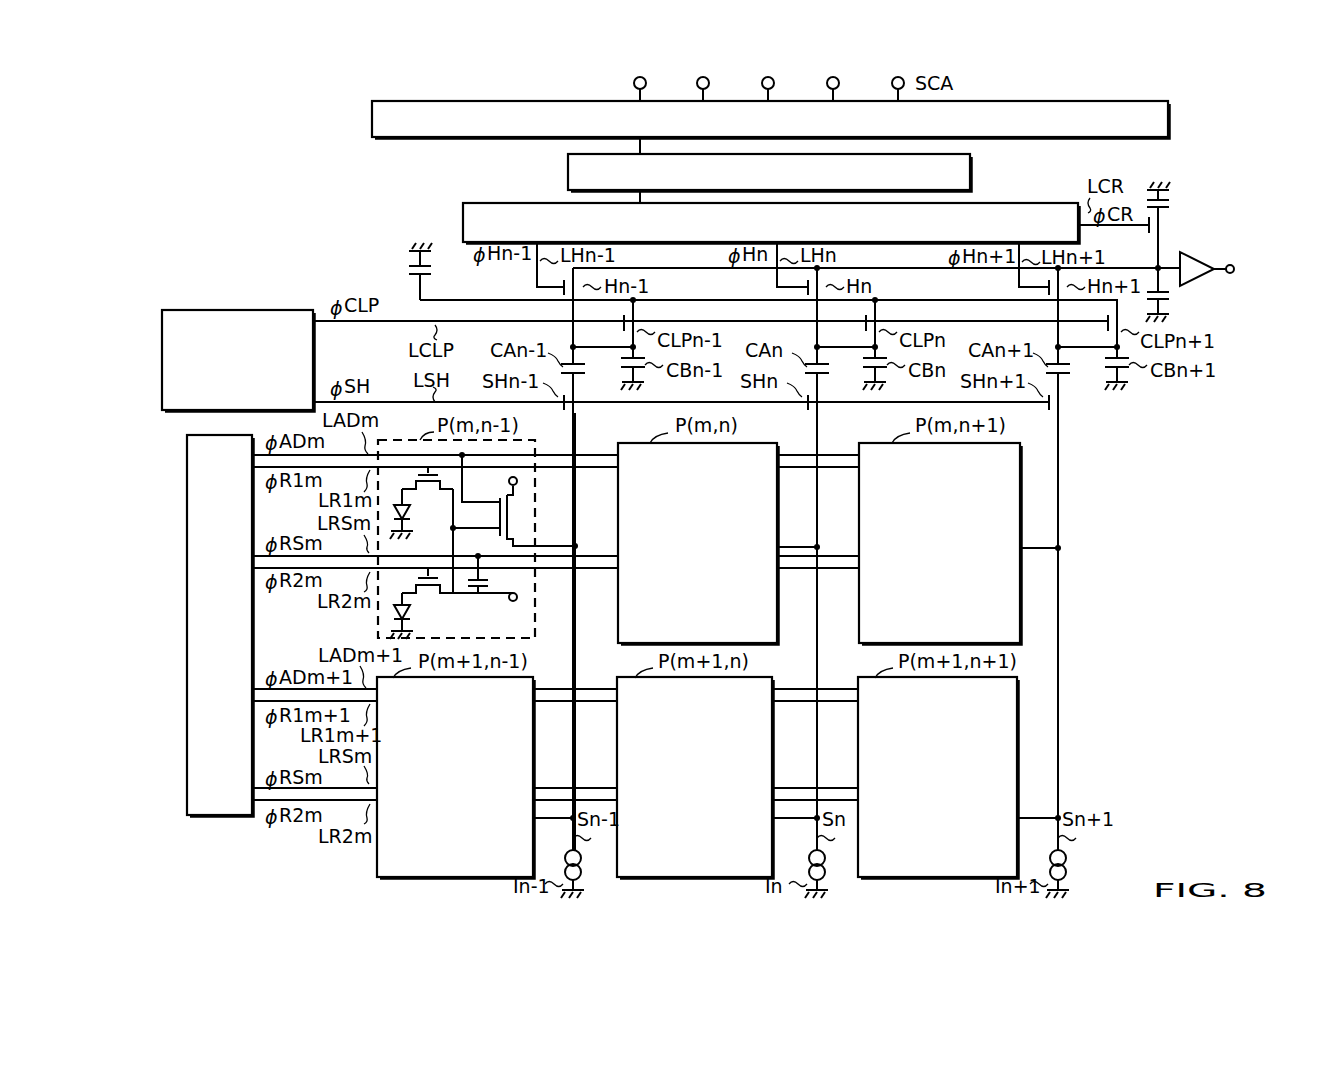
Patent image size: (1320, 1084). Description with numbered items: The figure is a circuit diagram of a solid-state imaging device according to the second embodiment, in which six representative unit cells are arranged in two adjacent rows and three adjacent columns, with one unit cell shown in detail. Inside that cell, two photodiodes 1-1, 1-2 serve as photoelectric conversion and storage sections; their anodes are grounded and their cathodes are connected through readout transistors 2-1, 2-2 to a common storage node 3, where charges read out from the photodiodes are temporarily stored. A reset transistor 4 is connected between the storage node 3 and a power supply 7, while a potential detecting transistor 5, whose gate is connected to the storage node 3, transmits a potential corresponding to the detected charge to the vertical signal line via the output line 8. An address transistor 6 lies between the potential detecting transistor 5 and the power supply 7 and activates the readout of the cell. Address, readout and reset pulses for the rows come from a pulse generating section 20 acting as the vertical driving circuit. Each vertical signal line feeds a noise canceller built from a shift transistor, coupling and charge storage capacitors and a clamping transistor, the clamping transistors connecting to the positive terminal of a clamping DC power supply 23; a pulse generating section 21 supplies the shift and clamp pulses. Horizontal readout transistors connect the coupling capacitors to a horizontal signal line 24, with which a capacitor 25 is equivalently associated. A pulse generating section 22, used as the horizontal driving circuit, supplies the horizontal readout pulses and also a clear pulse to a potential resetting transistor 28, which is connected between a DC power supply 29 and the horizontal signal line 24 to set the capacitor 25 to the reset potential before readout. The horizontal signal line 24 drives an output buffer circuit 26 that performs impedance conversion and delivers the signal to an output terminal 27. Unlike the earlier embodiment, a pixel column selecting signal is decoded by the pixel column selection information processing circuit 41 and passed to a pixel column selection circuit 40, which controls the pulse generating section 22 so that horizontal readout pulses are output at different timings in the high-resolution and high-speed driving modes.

The pixel column selection information processing circuit (decoder) 41 is at (370, 121).
The pixel column selection circuit 40 is at (563, 174).
The pulse generating section 22 is at (456, 219).
The pulse generating section 21 is at (288, 309).
The pulse generating section 20 is at (216, 817).
The clamping DC power supply 23 is at (406, 273).
The horizontal signal line 24 is at (1124, 268).
The capacitor 25 is at (1172, 310).
The output buffer circuit 26 is at (1203, 282).
The output terminal 27 is at (1234, 264).
The potential resetting transistor 28 is at (1175, 227).
The DC power supply 29 is at (1175, 204).
The photodiode 1-1 is at (408, 523).
The photodiode 1-2 is at (392, 612).
The readout transistor 2-1 is at (431, 491).
The readout transistor 2-2 is at (431, 595).
The storage node 3 is at (458, 532).
The reset transistor 4 is at (478, 596).
The potential detecting transistor 5 is at (516, 531).
The address transistor 6 is at (516, 508).
The power supply 7 is at (519, 482).
The output line 8 is at (570, 548).